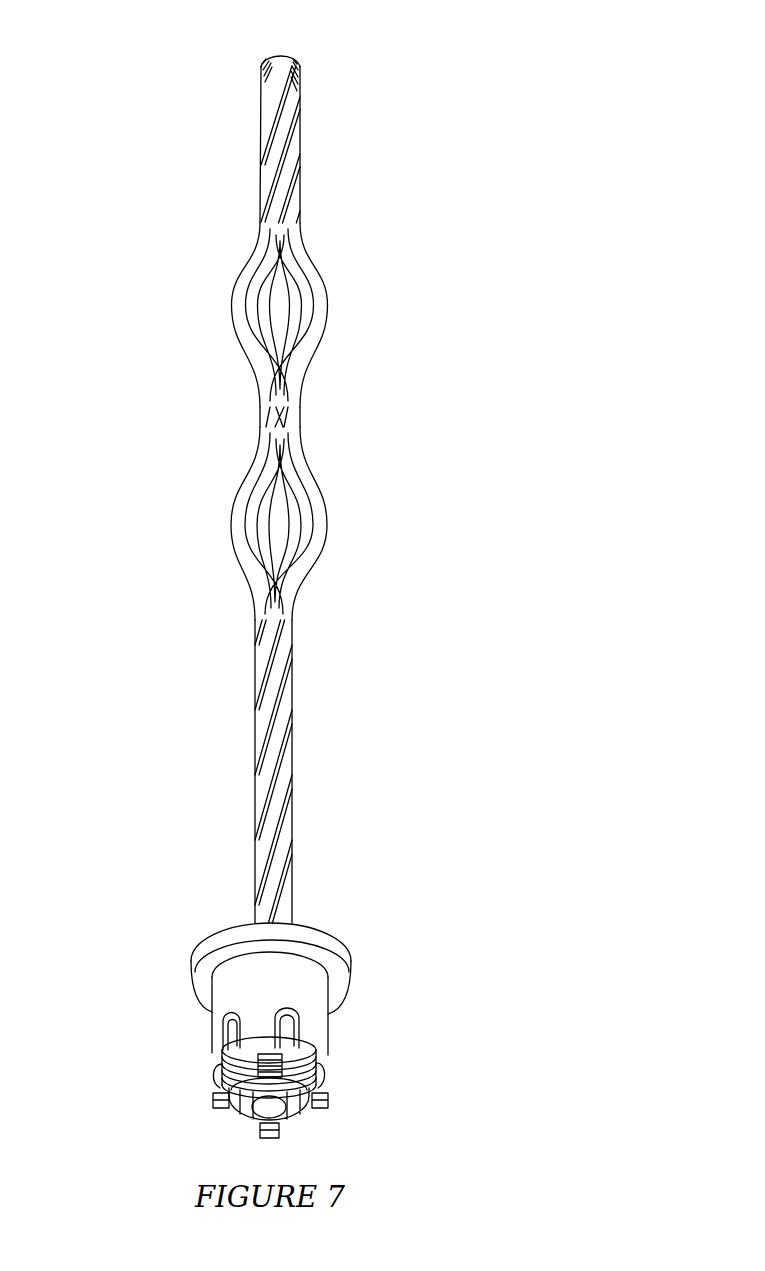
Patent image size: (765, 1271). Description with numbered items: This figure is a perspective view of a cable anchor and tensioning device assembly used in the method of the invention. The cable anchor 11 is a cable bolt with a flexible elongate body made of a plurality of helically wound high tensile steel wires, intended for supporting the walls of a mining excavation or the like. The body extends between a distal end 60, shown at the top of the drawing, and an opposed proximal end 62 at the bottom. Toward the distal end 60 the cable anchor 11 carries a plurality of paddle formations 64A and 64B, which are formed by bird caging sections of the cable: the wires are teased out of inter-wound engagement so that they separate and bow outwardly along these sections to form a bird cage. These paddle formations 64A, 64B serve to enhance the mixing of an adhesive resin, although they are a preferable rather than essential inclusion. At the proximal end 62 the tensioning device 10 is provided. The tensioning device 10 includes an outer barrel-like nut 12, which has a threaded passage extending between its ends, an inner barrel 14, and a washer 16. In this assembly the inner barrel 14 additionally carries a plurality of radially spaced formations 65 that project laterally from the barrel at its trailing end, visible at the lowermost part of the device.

The tensioning device 10 is at (292, 1032).
The cable anchor 11 is at (338, 705).
The nut 12 is at (225, 988).
The inner barrel 14 is at (230, 1070).
The washer 16 is at (313, 935).
The distal end 60 is at (290, 53).
The proximal end 62 is at (268, 1107).
The paddle formation 64A is at (335, 300).
The paddle formation 64B is at (332, 525).
The radially spaced formations 65 is at (328, 1103).